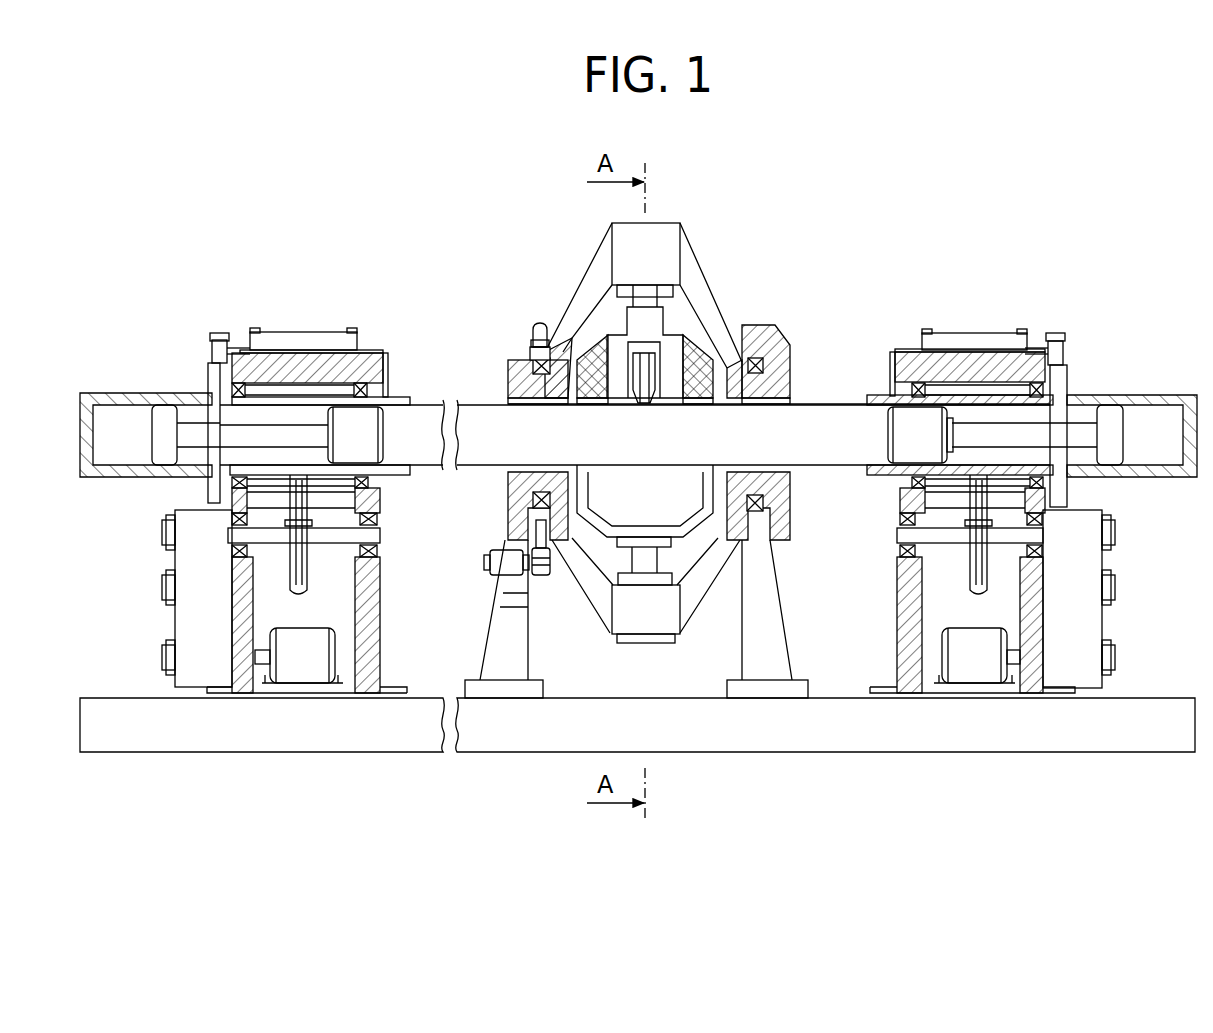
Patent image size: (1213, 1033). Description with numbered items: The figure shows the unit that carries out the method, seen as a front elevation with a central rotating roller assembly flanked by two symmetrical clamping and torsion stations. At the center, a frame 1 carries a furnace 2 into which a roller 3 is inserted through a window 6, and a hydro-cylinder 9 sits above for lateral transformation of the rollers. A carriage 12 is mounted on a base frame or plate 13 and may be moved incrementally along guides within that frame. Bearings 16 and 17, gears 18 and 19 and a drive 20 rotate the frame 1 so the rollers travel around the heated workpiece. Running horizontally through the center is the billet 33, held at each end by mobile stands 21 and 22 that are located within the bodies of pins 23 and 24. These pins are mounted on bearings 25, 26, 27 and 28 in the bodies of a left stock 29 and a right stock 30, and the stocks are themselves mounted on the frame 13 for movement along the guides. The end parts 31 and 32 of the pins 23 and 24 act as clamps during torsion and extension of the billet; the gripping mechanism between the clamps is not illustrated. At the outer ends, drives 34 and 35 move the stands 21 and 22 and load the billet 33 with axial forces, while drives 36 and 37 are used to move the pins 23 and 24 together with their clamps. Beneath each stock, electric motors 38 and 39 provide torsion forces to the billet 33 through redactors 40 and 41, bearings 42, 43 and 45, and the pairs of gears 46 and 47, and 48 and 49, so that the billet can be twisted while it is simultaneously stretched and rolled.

The frame 1 is at (695, 275).
The furnace 2 is at (715, 330).
The roller 3 is at (643, 357).
The window 6 is at (680, 340).
The hydro-cylinder 9 is at (660, 225).
The carriage 12 is at (775, 660).
The frame or plate 13 is at (1050, 737).
The bearing 16 is at (765, 340).
The bearing 17 is at (508, 386).
The gear 18 is at (540, 323).
The gear 19 is at (542, 578).
The drive 20 is at (488, 562).
The mobile stand 21 is at (370, 410).
The mobile stand 22 is at (912, 440).
The pin 23 is at (210, 390).
The pin 24 is at (1065, 390).
The bearing 25 is at (237, 338).
The bearing 26 is at (385, 355).
The bearing 27 is at (895, 358).
The bearing 28 is at (1053, 335).
The left stock 29 is at (365, 352).
The right stock 30 is at (910, 352).
The end part of pin 31 is at (395, 398).
The end part of pin 32 is at (870, 395).
The billet 33 is at (805, 404).
The drive 34 is at (165, 405).
The drive 35 is at (1102, 400).
The drive 36 is at (330, 332).
The drive 37 is at (975, 332).
The electric motor 38 is at (320, 632).
The electric motor 39 is at (975, 632).
The redactor 40 is at (190, 570).
The redactor 41 is at (1090, 635).
The bearing 42 is at (256, 563).
The bearing 43 is at (380, 558).
The bearing 45 is at (1060, 560).
The gear 46 is at (303, 503).
The gear 47 is at (985, 503).
The gear 48 is at (232, 478).
The gear 49 is at (1055, 478).